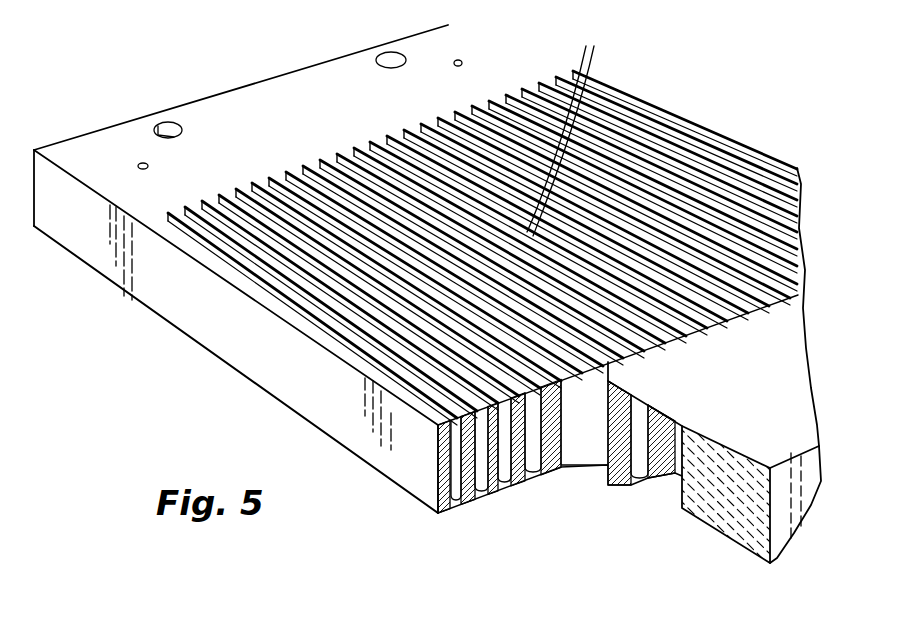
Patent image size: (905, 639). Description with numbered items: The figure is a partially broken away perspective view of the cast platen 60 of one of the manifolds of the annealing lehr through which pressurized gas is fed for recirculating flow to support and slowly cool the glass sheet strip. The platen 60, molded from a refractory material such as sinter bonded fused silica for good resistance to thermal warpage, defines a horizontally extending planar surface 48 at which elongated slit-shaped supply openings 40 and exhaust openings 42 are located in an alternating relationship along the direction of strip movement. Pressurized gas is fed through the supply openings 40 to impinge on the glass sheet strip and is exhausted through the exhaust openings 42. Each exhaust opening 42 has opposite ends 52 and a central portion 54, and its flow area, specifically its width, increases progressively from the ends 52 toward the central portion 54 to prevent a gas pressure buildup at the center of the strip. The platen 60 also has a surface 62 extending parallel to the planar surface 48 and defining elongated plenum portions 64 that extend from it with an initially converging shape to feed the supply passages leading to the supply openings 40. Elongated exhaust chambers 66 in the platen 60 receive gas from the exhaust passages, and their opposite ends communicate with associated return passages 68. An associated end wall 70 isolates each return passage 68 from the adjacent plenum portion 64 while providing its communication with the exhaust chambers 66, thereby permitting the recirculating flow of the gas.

The supply openings 40 is at (620, 172).
The exhaust openings 42 is at (497, 146).
The planar surface 48 is at (782, 341).
The opposite ends 52 is at (398, 126).
The central portion 54 is at (565, 123).
The cast platen 60 is at (299, 389).
The surface 62 is at (708, 528).
The plenum portions 64 is at (530, 450).
The exhaust chambers 66 is at (465, 478).
The return passages 68 is at (678, 418).
The end wall 70 is at (663, 430).